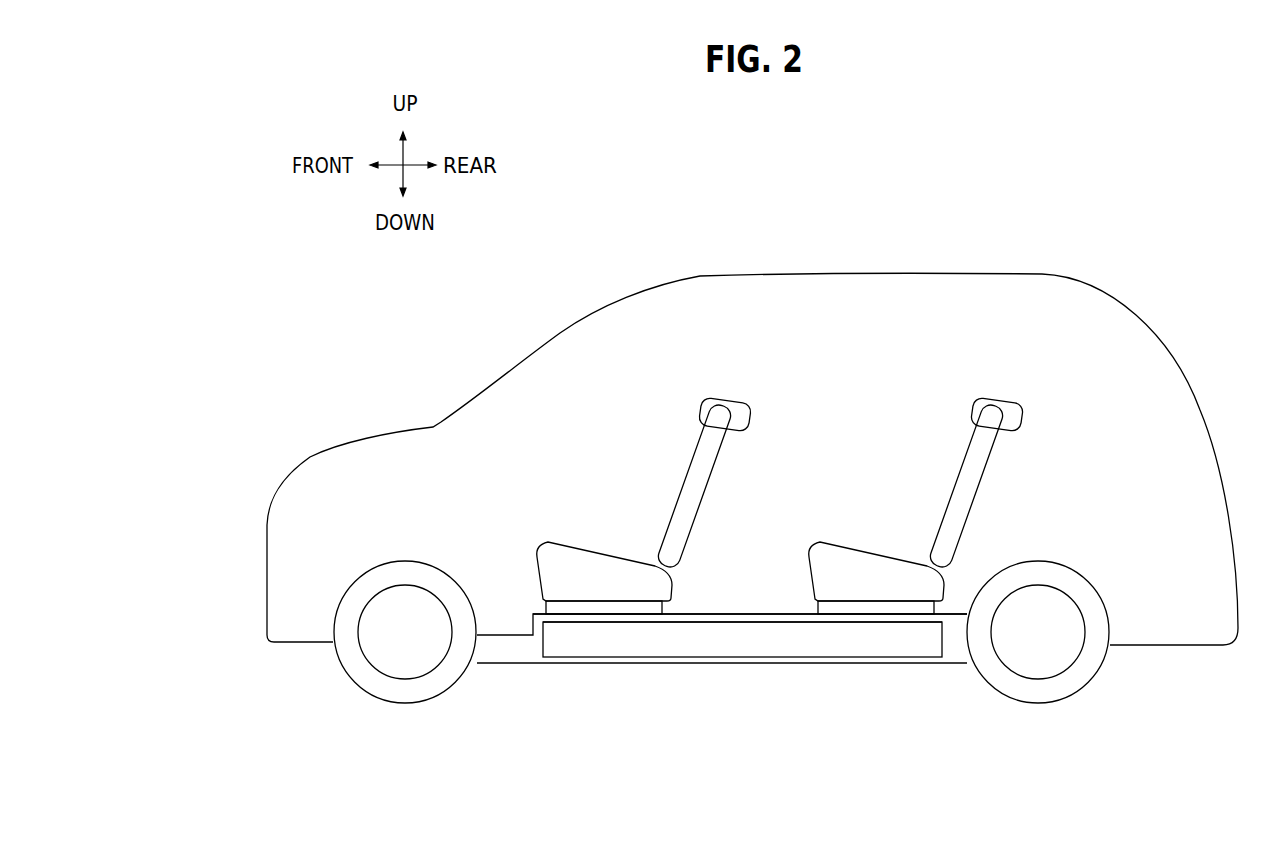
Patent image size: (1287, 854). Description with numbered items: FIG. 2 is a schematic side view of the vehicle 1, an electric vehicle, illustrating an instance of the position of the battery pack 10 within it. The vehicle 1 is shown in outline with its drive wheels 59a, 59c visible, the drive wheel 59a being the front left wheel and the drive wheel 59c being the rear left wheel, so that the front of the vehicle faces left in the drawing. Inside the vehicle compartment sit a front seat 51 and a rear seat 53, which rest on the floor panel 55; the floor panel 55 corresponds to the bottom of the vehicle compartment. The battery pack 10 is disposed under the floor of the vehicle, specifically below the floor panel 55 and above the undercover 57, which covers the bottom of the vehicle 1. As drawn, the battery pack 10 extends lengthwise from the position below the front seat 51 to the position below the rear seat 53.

The vehicle 1 is at (1069, 154).
The battery pack 10 is at (736, 648).
The front seat 51 is at (734, 389).
The rear seat 53 is at (1008, 391).
The floor panel 55 is at (758, 612).
The undercover 57 is at (502, 664).
The drive wheel 59a is at (405, 690).
The drive wheel 59c is at (1037, 689).